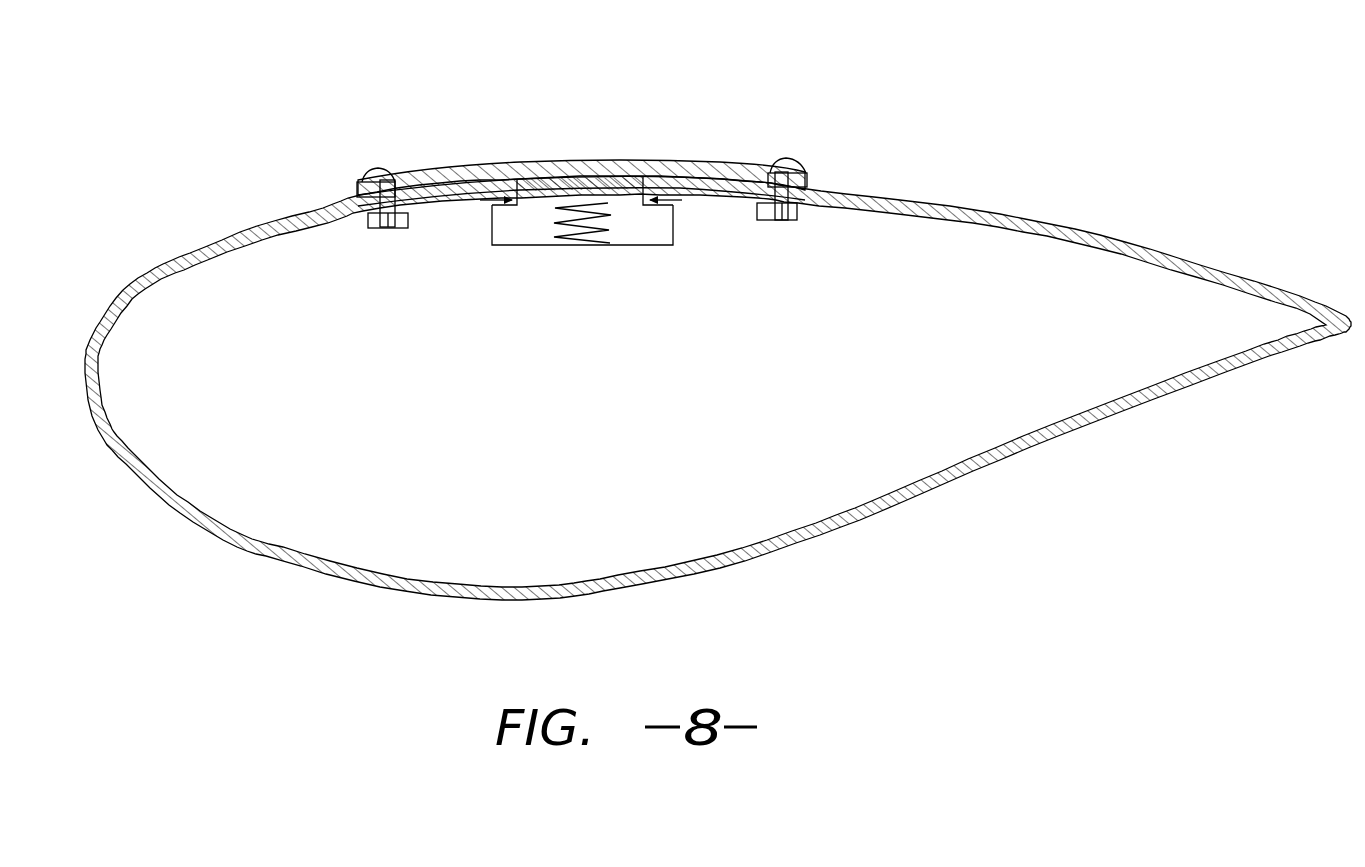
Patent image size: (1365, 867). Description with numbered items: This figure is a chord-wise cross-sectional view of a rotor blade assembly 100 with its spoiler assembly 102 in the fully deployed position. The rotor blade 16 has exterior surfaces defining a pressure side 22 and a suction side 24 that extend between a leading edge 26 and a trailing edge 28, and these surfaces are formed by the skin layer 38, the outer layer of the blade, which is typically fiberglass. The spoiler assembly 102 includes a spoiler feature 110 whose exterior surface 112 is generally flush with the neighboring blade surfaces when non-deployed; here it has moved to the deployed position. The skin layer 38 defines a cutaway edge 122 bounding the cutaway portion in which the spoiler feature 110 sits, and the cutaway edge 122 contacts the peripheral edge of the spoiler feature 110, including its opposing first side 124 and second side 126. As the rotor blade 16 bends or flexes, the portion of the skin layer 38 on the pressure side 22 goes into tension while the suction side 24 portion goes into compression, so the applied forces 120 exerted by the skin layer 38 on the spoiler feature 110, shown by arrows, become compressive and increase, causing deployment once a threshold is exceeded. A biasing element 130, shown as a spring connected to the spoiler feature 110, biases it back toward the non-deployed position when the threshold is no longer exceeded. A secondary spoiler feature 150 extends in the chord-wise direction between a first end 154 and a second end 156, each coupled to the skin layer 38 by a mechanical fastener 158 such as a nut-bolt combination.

The rotor blade 16 is at (1202, 238).
The pressure side 22 is at (565, 601).
The suction side 24 is at (1045, 222).
The leading edge 26 is at (84, 368).
The trailing edge 28 is at (1353, 324).
The skin layer 38 is at (942, 210).
The rotor blade assembly 100 is at (1180, 155).
The spoiler assembly 102 is at (597, 130).
The spoiler feature 110 is at (539, 212).
The exterior surface 112 is at (575, 162).
The applied forces 120 is at (682, 211).
The cutaway edge 122 is at (505, 208).
The first side 124 is at (461, 172).
The second side 126 is at (666, 172).
The biasing element 130 is at (620, 226).
The secondary spoiler feature 150 is at (723, 136).
The first end 154 is at (357, 192).
The second end 156 is at (808, 186).
The mechanical fastener 158 is at (378, 157).